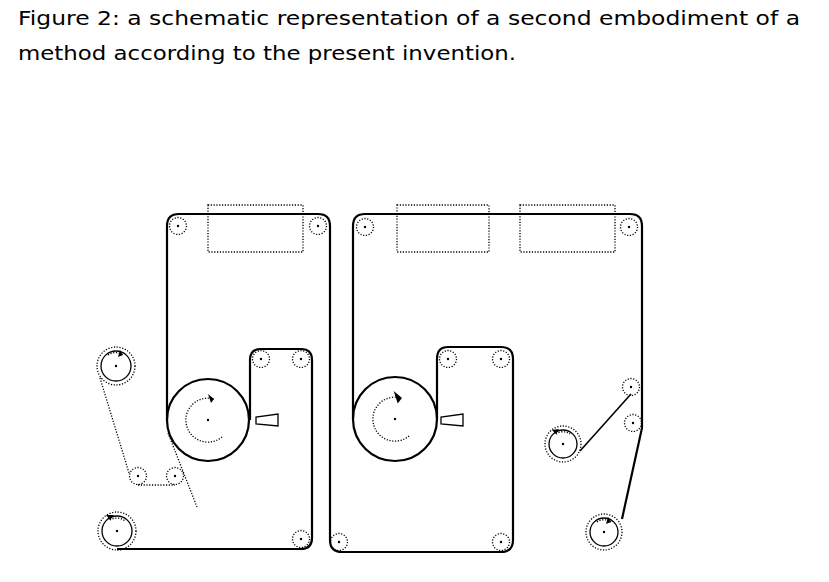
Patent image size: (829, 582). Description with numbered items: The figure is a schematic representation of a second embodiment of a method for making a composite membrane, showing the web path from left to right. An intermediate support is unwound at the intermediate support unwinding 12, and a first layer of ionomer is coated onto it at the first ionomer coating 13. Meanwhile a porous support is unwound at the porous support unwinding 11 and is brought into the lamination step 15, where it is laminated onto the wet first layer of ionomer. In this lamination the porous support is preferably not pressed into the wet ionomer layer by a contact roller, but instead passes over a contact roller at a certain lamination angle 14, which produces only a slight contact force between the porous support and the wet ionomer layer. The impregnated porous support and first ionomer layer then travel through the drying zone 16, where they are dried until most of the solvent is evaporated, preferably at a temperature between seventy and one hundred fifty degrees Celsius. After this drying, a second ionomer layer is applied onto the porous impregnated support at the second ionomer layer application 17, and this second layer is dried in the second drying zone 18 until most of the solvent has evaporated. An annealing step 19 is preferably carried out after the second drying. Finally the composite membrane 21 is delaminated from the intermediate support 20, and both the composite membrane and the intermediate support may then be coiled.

The porous support unwinding 11 is at (105, 366).
The intermediate support unwinding 12 is at (104, 531).
The first ionomer coating 13 is at (272, 406).
The lamination angle 14 is at (201, 462).
The lamination step 15 is at (193, 420).
The drying zone 16 is at (255, 228).
The second ionomer layer application 17 is at (457, 404).
The second drying zone 18 is at (443, 228).
The annealing step 19 is at (567, 228).
The intermediate support 20 is at (588, 428).
The composite membrane 21 is at (618, 537).